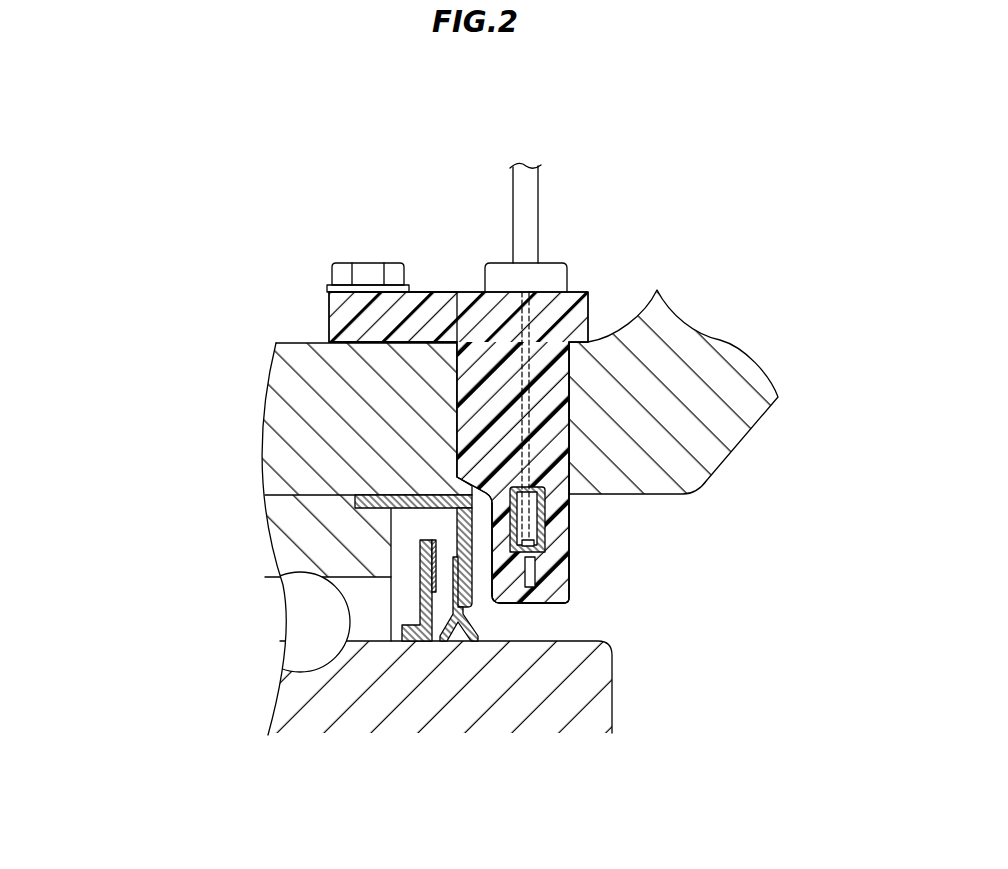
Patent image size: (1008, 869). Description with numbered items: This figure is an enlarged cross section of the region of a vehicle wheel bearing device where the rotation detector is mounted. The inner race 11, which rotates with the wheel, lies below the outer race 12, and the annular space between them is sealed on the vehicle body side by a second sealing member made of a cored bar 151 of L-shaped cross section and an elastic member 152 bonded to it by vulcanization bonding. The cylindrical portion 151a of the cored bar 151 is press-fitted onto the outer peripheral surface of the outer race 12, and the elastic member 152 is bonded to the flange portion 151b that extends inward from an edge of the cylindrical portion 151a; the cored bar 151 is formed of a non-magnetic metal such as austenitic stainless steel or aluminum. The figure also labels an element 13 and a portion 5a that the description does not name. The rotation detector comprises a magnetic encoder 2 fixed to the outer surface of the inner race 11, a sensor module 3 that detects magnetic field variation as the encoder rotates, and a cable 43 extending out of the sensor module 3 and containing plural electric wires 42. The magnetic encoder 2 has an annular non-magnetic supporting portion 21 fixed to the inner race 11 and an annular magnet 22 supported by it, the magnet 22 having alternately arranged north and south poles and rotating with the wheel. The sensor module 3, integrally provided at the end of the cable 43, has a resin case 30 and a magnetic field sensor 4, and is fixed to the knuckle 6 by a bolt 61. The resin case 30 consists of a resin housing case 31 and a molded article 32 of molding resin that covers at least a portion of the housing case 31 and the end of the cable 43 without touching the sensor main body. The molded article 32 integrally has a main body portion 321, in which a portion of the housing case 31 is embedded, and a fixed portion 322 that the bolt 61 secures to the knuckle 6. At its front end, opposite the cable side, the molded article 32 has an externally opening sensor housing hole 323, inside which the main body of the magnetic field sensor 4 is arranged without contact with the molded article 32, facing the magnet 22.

The magnetic encoder 2 is at (628, 691).
The sensor module 3 is at (559, 383).
The magnetic field sensor 4 is at (532, 577).
The hole 5a is at (567, 433).
The knuckle 6 is at (514, 393).
The inner race 11 is at (295, 705).
The outer race 12 is at (280, 527).
The ball 13 is at (293, 613).
The supporting portion 21 is at (409, 632).
The magnet 22 is at (436, 592).
The resin case 30 is at (571, 507).
The housing case 31 is at (538, 523).
The molded article 32 is at (541, 433).
The electric wires 42 is at (522, 332).
The cable 43 is at (531, 203).
The bolt 61 is at (372, 270).
The cored bar 151 is at (457, 505).
The cylindrical portion 151a is at (408, 497).
The flange portion 151b is at (654, 570).
The elastic member 152 is at (463, 612).
The main body portion 321 is at (558, 388).
The fixed portion 322 is at (336, 307).
The sensor housing hole 323 is at (532, 596).